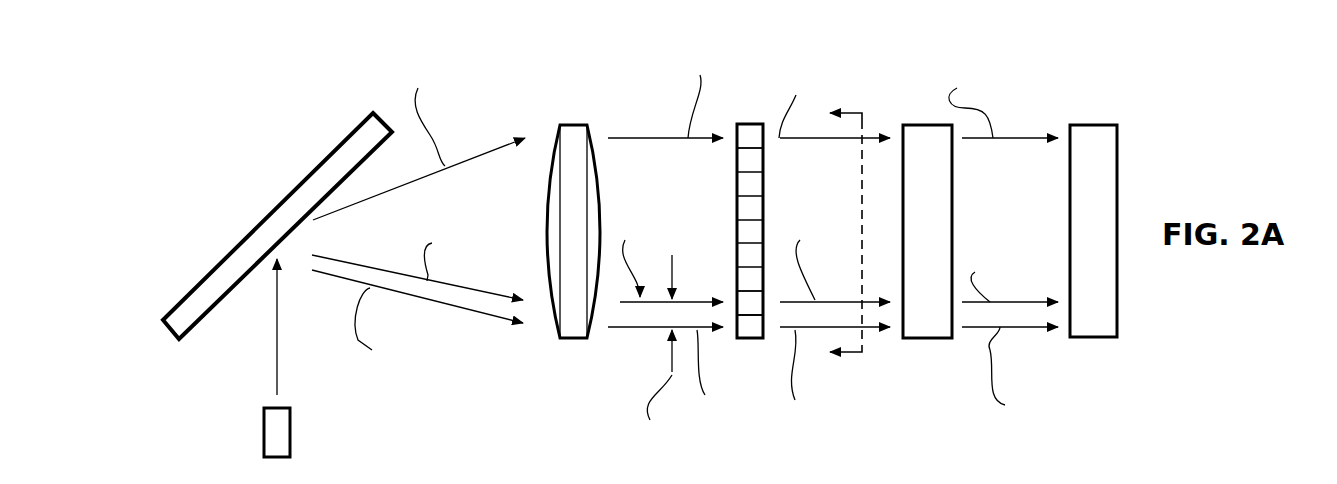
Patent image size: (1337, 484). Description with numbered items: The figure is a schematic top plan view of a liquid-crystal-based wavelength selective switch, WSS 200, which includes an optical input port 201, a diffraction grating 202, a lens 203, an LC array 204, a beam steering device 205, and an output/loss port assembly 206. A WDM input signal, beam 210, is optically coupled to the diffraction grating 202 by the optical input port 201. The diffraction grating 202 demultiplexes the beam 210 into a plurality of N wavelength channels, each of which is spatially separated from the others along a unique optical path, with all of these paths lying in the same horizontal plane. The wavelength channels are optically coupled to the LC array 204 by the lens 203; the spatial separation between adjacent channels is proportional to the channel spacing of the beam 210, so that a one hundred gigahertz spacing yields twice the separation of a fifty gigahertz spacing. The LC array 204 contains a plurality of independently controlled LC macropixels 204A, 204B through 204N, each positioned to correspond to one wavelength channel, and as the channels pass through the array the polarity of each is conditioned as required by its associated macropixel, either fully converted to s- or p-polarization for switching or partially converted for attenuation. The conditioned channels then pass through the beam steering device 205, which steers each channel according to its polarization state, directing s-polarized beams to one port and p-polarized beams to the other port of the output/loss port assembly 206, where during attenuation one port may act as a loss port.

The WSS 200 is at (278, 104).
The optical input port 201 is at (263, 418).
The diffraction grating 202 is at (240, 237).
The lens 203 is at (577, 125).
The LC array 204 is at (749, 118).
The LC macropixel 204N is at (745, 140).
The LC macropixel 204B is at (745, 305).
The LC macropixel 204A is at (755, 330).
The beam steering device 205 is at (927, 125).
The output/loss port assembly 206 is at (1144, 155).
The beam 210 is at (277, 364).